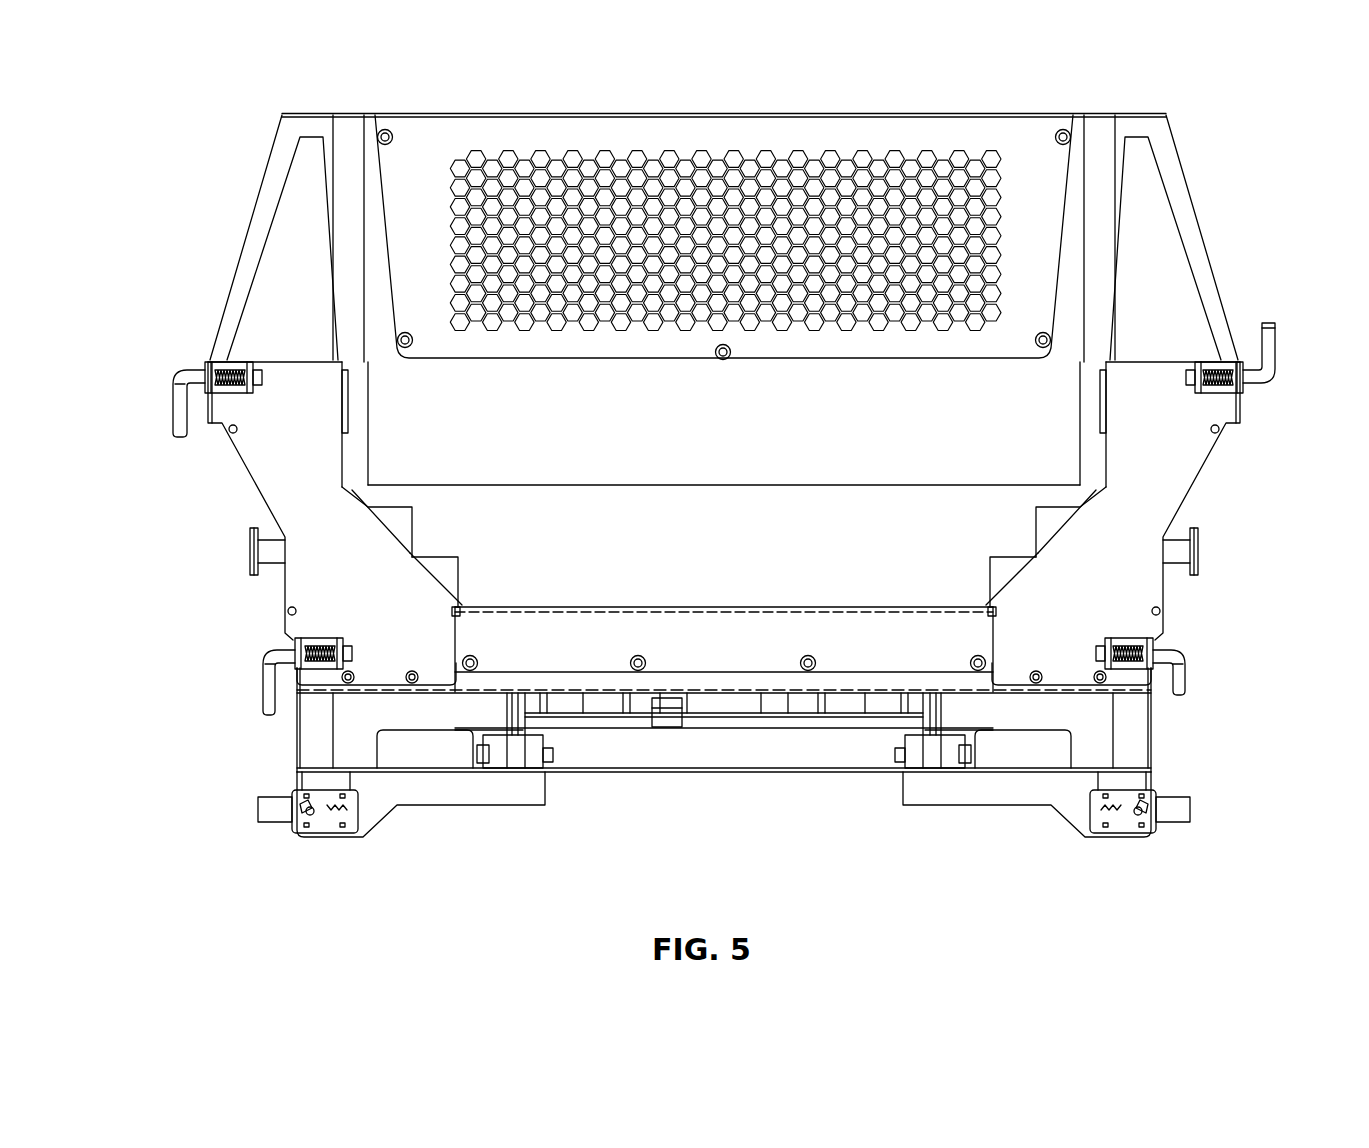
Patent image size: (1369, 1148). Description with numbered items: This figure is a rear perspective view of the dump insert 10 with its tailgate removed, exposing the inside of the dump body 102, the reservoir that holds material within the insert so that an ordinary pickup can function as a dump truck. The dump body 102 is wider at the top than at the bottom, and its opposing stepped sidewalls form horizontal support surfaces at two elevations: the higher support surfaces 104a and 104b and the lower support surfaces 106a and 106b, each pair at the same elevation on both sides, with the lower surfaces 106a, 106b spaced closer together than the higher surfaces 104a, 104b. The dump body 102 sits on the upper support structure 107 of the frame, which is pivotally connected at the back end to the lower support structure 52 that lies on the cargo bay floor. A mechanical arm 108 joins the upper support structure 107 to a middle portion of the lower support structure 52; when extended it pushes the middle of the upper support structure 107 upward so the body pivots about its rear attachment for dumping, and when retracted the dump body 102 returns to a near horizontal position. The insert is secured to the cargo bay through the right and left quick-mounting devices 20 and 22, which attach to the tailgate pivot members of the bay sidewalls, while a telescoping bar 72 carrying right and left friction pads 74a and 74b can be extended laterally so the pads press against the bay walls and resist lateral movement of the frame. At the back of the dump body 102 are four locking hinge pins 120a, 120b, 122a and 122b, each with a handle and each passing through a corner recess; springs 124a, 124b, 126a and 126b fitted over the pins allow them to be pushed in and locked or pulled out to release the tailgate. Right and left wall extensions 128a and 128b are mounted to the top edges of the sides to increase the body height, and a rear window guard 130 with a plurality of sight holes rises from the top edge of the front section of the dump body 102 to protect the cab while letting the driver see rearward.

The dump insert 10 is at (240, 110).
The right quick-mounting device 20 is at (1163, 857).
The left quick-mounting device 22 is at (310, 846).
The lower support structure 52 is at (580, 718).
The telescoping bar 72 is at (1185, 550).
The right friction pad 74a is at (1200, 563).
The left friction pad 74b is at (255, 540).
The dump body 102 is at (810, 576).
The upper horizontal support surface 104a is at (1050, 503).
The upper horizontal support surface 104b is at (393, 505).
The lower horizontal support surface 106a is at (1010, 555).
The lower horizontal support surface 106b is at (440, 555).
The upper support structure 107 is at (612, 678).
The mechanical arm 108 is at (718, 713).
The locking hinge pin 120a is at (175, 410).
The locking hinge pin 120b is at (1263, 348).
The locking hinge pin 122a is at (265, 683).
The locking hinge pin 122b is at (1180, 675).
The spring 124a is at (222, 370).
The spring 124b is at (1222, 378).
The spring 126a is at (305, 650).
The spring 126b is at (1130, 655).
The right wall extension 128a is at (298, 280).
The left wall extension 128b is at (1140, 262).
The rear window guard 130 is at (1030, 178).